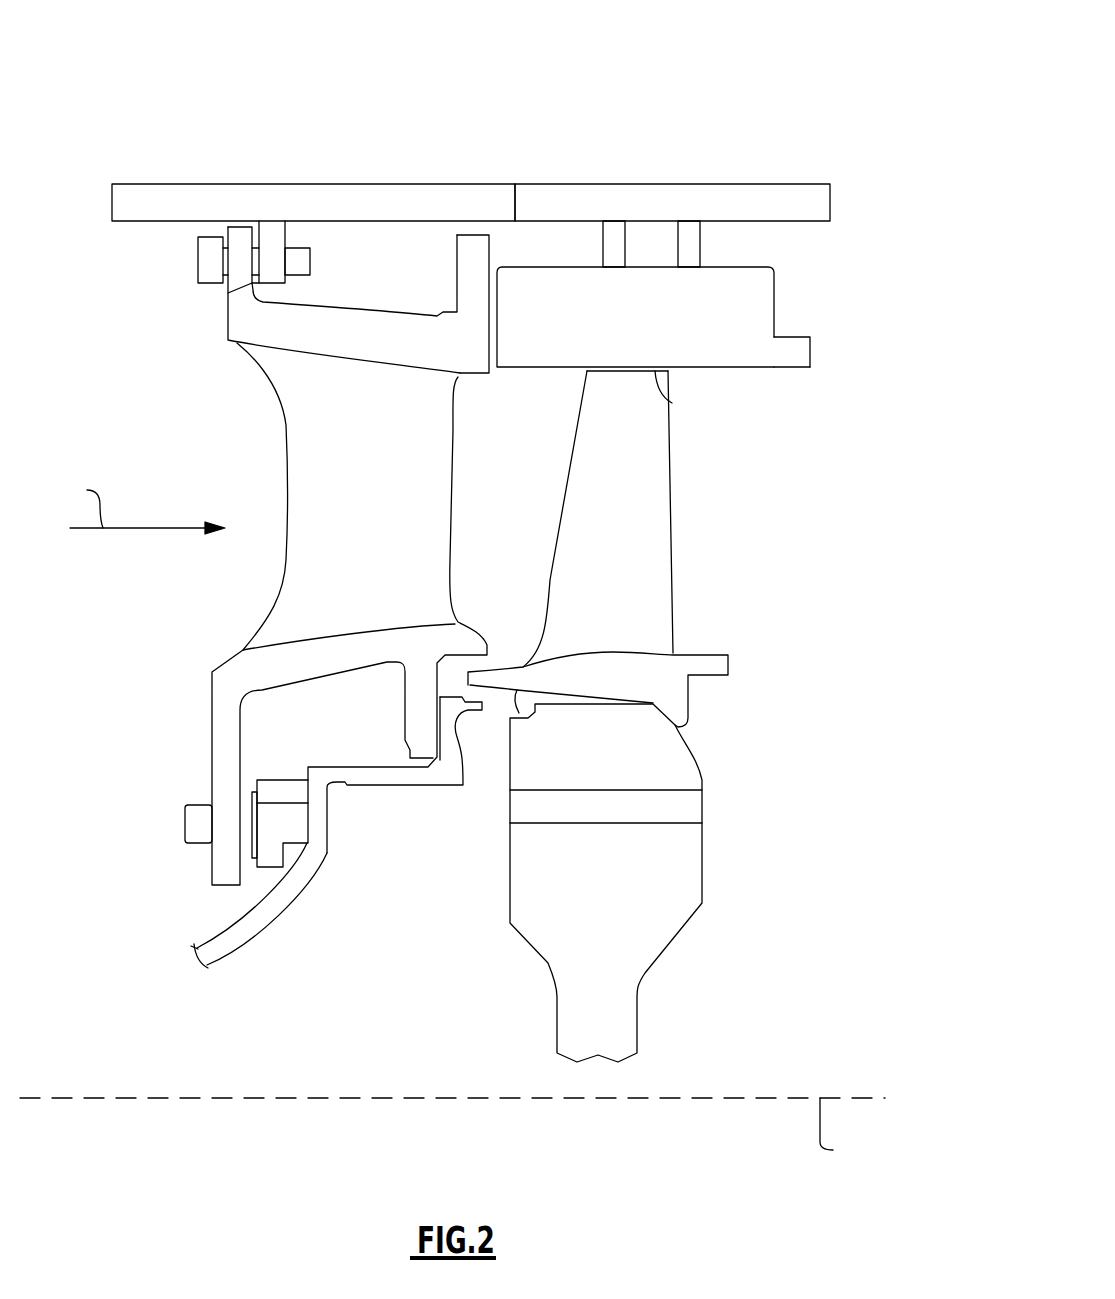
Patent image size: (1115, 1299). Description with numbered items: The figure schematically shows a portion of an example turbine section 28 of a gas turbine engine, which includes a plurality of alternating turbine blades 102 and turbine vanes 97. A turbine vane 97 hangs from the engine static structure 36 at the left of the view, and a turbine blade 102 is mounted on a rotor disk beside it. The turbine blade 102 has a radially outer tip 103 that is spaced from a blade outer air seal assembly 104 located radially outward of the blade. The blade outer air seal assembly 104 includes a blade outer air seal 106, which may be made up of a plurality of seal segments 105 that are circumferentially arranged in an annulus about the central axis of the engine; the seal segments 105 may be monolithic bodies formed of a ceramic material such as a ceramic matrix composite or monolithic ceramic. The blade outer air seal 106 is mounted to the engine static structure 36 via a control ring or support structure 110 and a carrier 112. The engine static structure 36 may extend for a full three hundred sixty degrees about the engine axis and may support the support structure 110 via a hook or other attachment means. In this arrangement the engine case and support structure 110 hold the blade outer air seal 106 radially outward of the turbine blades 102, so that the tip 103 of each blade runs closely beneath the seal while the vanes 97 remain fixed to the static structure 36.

The turbine section 28 is at (756, 68).
The engine static structure 36 is at (178, 202).
The turbine vane 97 is at (458, 347).
The turbine blade 102 is at (658, 490).
The radially outer tip 103 is at (672, 403).
The blade outer air seal assembly 104 is at (828, 280).
The seal segment 105 is at (797, 343).
The blade outer air seal 106 is at (793, 355).
The support structure 110 is at (559, 200).
The carrier 112 is at (615, 247).